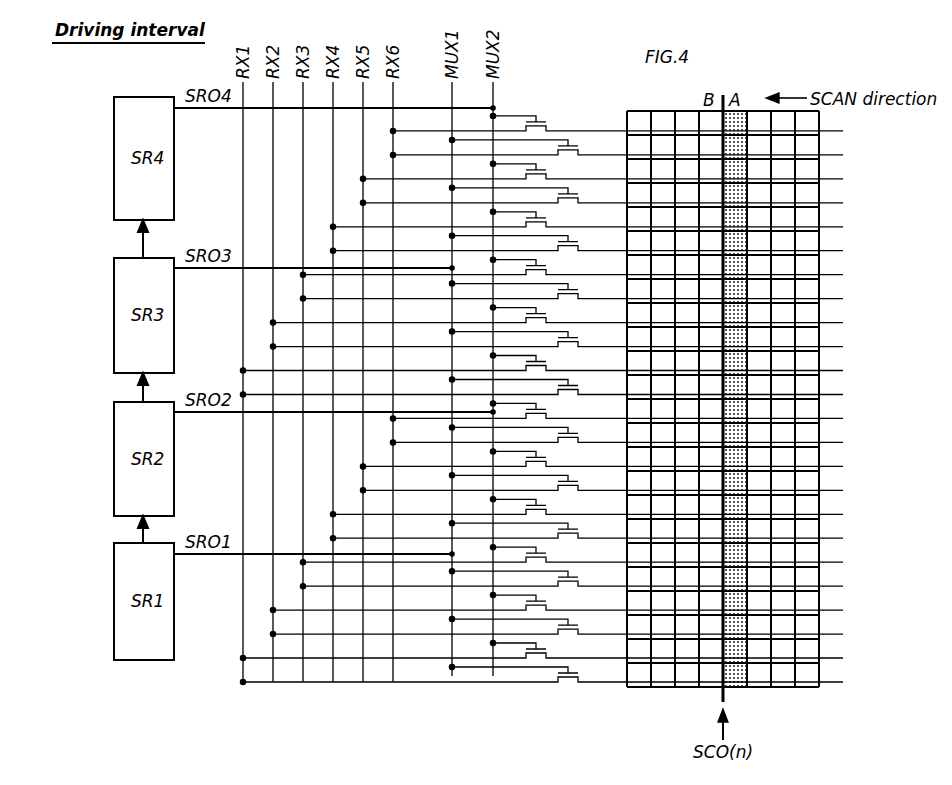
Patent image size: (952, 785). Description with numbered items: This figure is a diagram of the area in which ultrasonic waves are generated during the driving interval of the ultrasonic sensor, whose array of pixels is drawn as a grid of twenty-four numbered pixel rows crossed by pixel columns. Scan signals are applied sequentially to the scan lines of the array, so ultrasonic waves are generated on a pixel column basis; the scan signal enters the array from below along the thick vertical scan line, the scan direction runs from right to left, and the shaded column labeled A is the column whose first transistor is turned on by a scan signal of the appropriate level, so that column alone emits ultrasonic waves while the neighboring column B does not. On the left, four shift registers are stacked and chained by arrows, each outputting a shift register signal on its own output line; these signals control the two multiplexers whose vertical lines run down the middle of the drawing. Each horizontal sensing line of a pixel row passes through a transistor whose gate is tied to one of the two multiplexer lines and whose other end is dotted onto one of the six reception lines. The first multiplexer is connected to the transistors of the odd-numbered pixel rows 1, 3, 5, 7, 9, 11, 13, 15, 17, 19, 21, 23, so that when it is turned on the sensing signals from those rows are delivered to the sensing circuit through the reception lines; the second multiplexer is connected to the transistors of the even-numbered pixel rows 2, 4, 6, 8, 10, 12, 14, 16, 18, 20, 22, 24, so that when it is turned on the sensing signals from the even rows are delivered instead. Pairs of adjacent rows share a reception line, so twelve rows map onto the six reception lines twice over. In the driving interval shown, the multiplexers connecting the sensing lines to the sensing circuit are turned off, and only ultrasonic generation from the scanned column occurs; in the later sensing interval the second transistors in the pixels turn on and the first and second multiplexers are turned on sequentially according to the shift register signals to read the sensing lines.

The scan line 1 is at (819, 682).
The scan line 2 is at (819, 658).
The scan line 3 is at (819, 634).
The scan line 4 is at (819, 610).
The scan line 5 is at (819, 586).
The scan line 6 is at (819, 562).
The scan line 7 is at (819, 538).
The scan line 8 is at (819, 514).
The scan line 9 is at (819, 490).
The scan line 10 is at (819, 466).
The scan line 11 is at (819, 442).
The scan line 12 is at (819, 418).
The scan line 13 is at (819, 394).
The scan line 14 is at (819, 370).
The scan line 15 is at (819, 347).
The scan line 16 is at (819, 323).
The scan line 17 is at (819, 299).
The scan line 18 is at (819, 275).
The scan line 19 is at (819, 251).
The scan line 20 is at (819, 227).
The scan line 21 is at (819, 203).
The scan line 22 is at (819, 179).
The scan line 23 is at (819, 155).
The scan line 24 is at (819, 131).